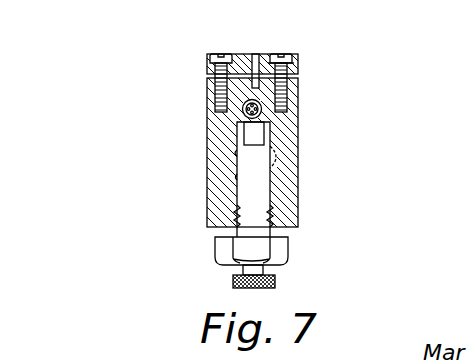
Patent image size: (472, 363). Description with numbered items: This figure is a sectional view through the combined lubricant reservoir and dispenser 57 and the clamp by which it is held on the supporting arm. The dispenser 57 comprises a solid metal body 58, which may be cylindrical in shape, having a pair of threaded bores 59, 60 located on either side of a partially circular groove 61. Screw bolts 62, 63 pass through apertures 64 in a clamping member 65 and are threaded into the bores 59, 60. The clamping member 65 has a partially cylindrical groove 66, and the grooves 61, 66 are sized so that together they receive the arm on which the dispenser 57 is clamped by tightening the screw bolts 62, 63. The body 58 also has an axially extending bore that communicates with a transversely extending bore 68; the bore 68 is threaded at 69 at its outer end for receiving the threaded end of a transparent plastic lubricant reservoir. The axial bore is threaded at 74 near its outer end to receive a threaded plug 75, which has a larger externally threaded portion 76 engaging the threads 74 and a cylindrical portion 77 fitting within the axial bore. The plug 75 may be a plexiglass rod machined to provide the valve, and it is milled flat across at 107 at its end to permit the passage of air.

The combined lubricant reservoir and dispenser 57 is at (301, 149).
The body of the lubricant dispenser 58 is at (292, 132).
The threaded bore 59 is at (232, 100).
The threaded bore 60 is at (285, 101).
The partially circular groove 61 is at (267, 51).
The screw bolt 62 is at (238, 53).
The screw bolt 63 is at (293, 58).
The apertures 64 is at (287, 71).
The clamping member 65 is at (287, 56).
The partially cylindrical groove 66 is at (255, 88).
The transversely extending bore 68 is at (234, 153).
The threads 69 is at (267, 183).
The threads 74 is at (269, 215).
The threaded plug 75 is at (259, 202).
The larger externally threaded portion 76 is at (235, 212).
The cylindrical portion 77 is at (237, 177).
The flat milled across the end of the plug 107 is at (252, 137).